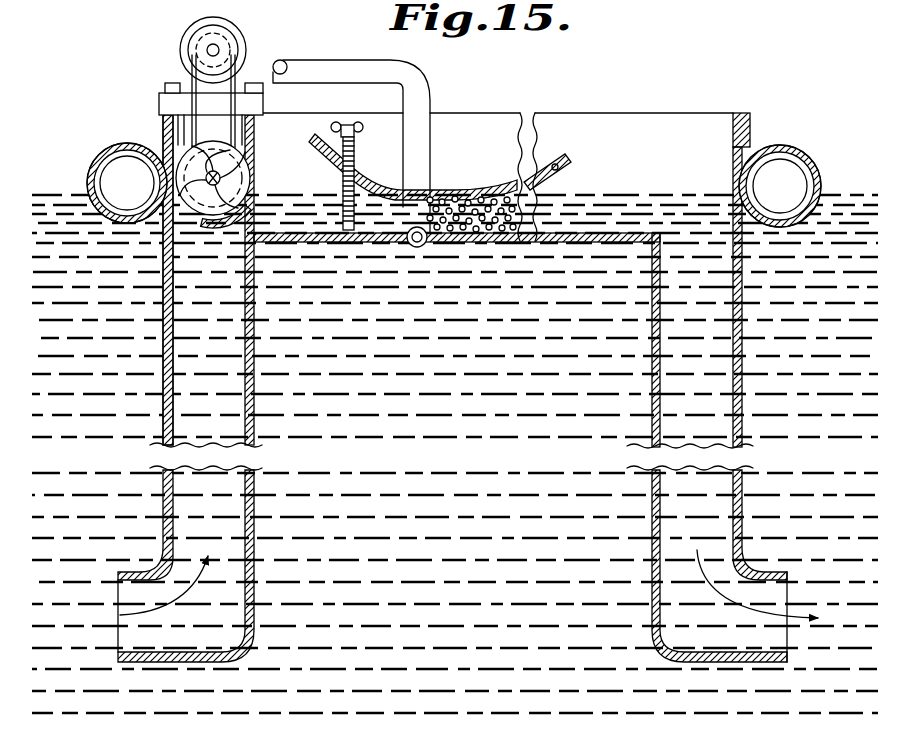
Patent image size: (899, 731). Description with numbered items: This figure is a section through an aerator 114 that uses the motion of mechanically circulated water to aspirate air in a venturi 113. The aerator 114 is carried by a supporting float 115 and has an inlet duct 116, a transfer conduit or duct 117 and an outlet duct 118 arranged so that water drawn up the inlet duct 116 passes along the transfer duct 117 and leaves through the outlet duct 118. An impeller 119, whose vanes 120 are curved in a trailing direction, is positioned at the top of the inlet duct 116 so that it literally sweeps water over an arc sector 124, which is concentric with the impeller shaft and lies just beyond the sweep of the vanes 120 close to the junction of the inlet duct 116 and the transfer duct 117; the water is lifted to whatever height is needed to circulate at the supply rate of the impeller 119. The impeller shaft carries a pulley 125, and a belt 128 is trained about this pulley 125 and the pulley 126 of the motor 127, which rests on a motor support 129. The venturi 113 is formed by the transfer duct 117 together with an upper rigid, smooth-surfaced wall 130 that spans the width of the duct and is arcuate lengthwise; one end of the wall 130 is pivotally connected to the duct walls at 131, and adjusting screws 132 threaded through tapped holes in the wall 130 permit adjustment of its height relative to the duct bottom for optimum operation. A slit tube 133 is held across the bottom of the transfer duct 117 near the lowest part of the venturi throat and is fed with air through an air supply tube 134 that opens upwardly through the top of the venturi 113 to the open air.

The venturi 113 is at (489, 176).
The aerator 114 is at (772, 126).
The supporting float 115 is at (86, 173).
The inlet duct 116 is at (164, 464).
The transfer conduit or duct 117 is at (655, 148).
The outlet duct 118 is at (650, 468).
The impeller 119 is at (255, 155).
The vanes 120 is at (157, 133).
The arc sector 124 is at (263, 214).
The pulley 125 is at (258, 73).
The pulley 126 is at (237, 39).
The motor 127 is at (183, 51).
The belt 128 is at (190, 80).
The motor support 129 is at (159, 100).
The upper rigid and smooth surfaced wall 130 is at (448, 197).
The pivotal connection 131 is at (556, 165).
The adjusting screws 132 is at (407, 197).
The slit tube 133 is at (427, 187).
The air supply tube 134 is at (388, 65).